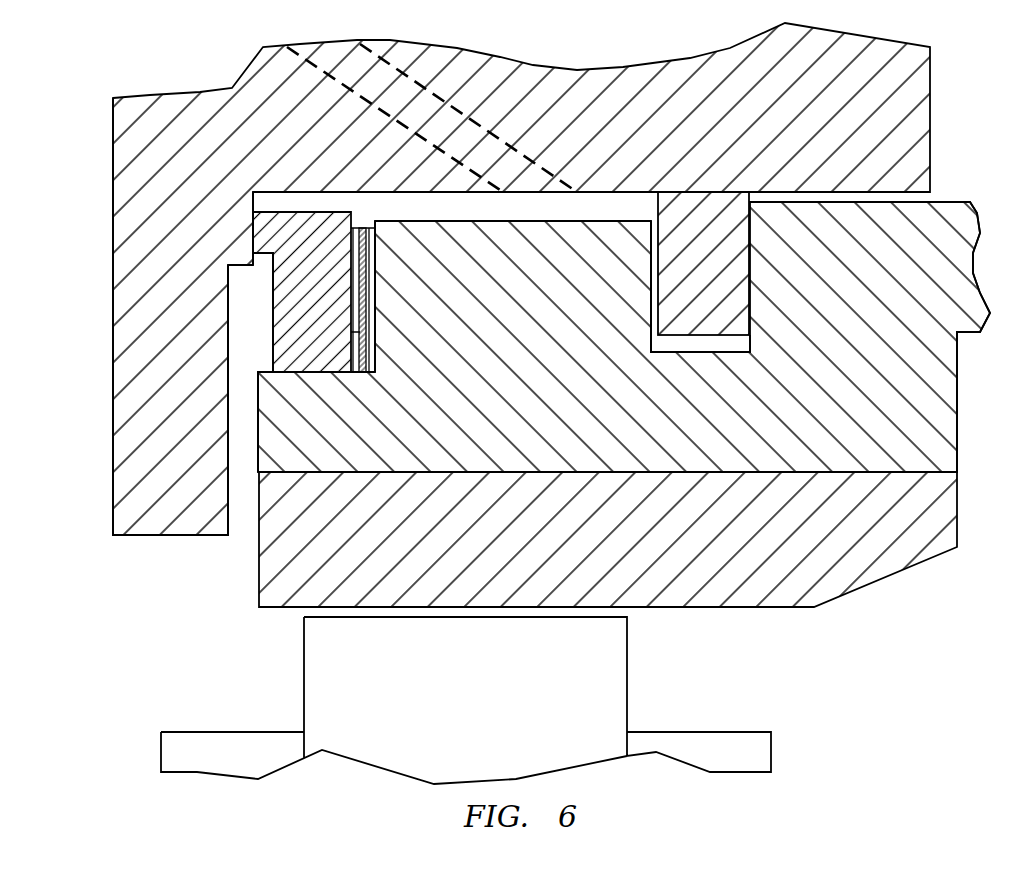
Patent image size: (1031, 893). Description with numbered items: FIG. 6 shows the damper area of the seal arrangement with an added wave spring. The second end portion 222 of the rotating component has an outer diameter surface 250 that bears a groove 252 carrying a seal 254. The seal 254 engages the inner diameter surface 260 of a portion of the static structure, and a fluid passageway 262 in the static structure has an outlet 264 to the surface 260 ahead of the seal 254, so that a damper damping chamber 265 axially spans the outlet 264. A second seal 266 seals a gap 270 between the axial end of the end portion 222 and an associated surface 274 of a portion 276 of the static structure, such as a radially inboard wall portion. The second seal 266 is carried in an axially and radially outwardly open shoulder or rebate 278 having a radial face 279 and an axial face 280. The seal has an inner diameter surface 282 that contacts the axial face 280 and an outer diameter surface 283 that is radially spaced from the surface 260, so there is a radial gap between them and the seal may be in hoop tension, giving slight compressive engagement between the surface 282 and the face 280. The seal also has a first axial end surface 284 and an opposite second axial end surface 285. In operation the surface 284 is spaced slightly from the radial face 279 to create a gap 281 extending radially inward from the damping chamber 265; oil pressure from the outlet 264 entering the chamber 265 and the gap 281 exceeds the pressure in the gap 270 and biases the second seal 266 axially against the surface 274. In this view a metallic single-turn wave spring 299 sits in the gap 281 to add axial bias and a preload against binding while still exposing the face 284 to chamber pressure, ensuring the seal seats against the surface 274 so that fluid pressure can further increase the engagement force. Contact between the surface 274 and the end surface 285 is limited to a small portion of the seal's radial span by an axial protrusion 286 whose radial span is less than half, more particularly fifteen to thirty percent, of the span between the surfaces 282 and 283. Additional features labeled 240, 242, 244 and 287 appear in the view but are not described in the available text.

The second end portion 222 is at (573, 398).
The first housing portion 240 is at (840, 472).
The mating surface 242 is at (452, 472).
The base 244 is at (771, 567).
The outer diameter surface 250 is at (952, 202).
The groove 252 is at (748, 247).
The seal 254 is at (722, 305).
The inner diameter surface 260 is at (465, 192).
The fluid passageway 262 is at (510, 142).
The outlet 264 is at (543, 193).
The damper damping chamber 265 is at (605, 197).
The second seal 266 is at (300, 330).
The gap 270 is at (246, 533).
The surface 274 is at (260, 224).
The portion of the static structure 276 is at (172, 503).
The shoulder or rebate 278 is at (318, 285).
The radial face 279 is at (366, 278).
The axial face 280 is at (302, 360).
The gap 281 is at (371, 375).
The inner diameter surface 282 is at (305, 372).
The outer diameter surface 283 is at (300, 212).
The first axial end surface 284 is at (365, 333).
The second axial end surface 285 is at (270, 285).
The axial protrusion 286 is at (262, 244).
The inner surface 287 is at (250, 232).
The metallic wave spring 299 is at (365, 317).